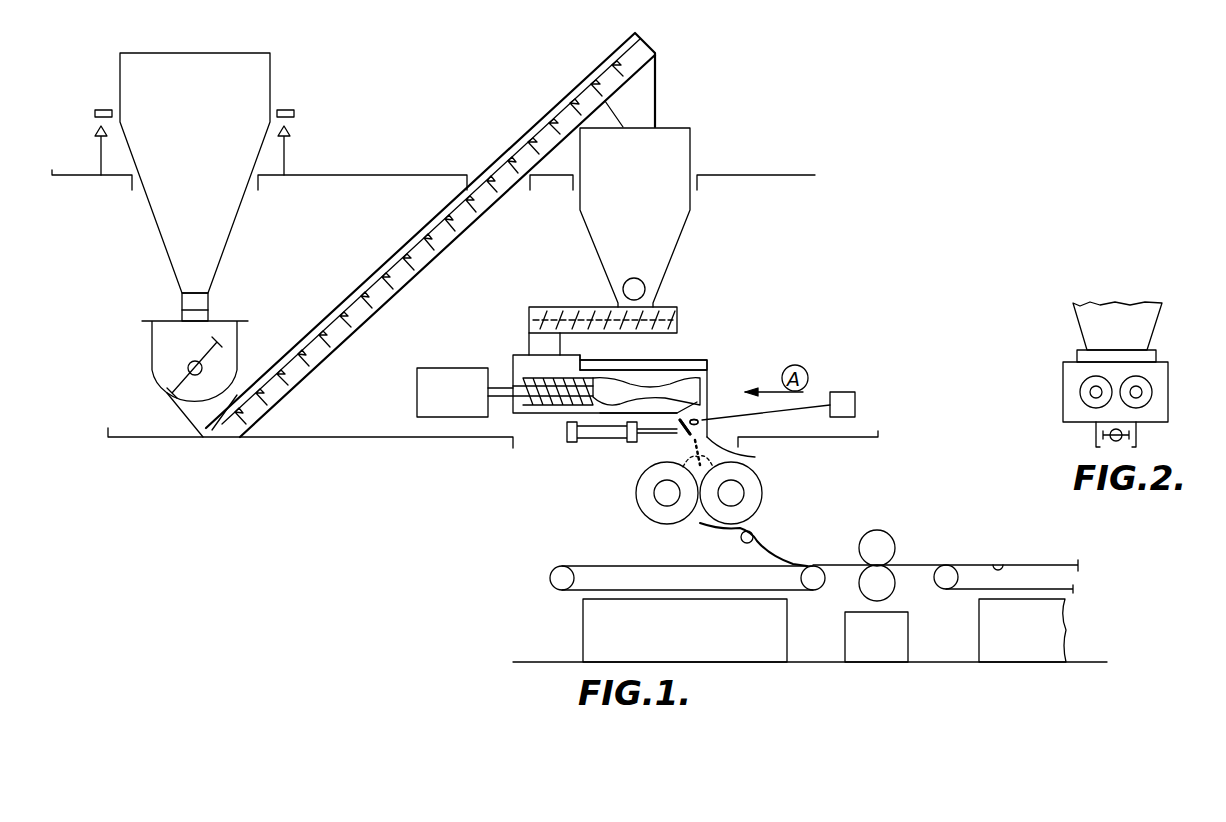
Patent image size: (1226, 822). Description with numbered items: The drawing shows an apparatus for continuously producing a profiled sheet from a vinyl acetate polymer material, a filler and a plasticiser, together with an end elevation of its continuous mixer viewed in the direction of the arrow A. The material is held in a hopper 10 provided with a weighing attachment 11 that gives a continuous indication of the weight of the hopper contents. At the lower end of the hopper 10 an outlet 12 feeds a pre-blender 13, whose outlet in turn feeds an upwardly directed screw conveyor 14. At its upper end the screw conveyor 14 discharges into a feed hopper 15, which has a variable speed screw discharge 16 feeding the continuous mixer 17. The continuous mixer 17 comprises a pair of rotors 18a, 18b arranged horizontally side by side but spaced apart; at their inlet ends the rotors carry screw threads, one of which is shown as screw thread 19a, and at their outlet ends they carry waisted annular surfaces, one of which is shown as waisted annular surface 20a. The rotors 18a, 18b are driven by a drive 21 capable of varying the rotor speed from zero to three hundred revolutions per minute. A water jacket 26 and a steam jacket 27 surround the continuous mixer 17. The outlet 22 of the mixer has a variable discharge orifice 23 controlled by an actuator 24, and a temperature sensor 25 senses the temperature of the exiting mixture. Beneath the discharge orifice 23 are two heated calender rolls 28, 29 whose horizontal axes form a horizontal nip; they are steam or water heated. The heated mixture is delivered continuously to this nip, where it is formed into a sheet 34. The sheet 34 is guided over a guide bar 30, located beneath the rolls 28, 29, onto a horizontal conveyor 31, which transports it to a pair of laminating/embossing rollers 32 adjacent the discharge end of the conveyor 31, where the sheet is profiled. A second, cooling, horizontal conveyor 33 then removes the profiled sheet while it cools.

In FIG. 1, the hopper 10 is at (258, 87).
In FIG. 1, the weighing attachment 11 is at (296, 113).
In FIG. 1, the outlet 12 is at (197, 311).
In FIG. 1, the pre-blender 13 is at (230, 352).
In FIG. 1, the screw conveyor 14 is at (395, 282).
In FIG. 1, the feed hopper 15 is at (672, 156).
In FIG. 1, the variable speed screw discharge 16 is at (552, 312).
In FIG. 1, the continuous mixer 17 is at (712, 367).
In FIG. 2, the continuous mixer 17 is at (1052, 352).
In FIG. 1, the rotor 18a is at (687, 385).
In FIG. 2, the rotor 18a is at (1080, 390).
In FIG. 2, the rotor 18b is at (1152, 390).
In FIG. 1, the screw thread 19a is at (533, 380).
In FIG. 1, the waisted annular surface 20a is at (657, 400).
In FIG. 1, the drive 21 is at (460, 404).
In FIG. 1, the outlet 22 is at (778, 431).
In FIG. 1, the variable discharge orifice 23 is at (688, 433).
In FIG. 1, the actuator 24 is at (587, 433).
In FIG. 1, the temperature sensor 25 is at (705, 410).
In FIG. 1, the water jacket 26 is at (642, 360).
In FIG. 1, the steam jacket 27 is at (590, 368).
In FIG. 1, the heated calender roll 28 is at (650, 498).
In FIG. 1, the heated calender roll 29 is at (753, 497).
In FIG. 1, the guide bar 30 is at (740, 538).
In FIG. 1, the horizontal conveyor 31 is at (627, 566).
In FIG. 1, the laminating/embossing rollers 32 is at (883, 580).
In FIG. 1, the second conveyor 33 is at (1007, 562).
In FIG. 1, the sheet 34 is at (770, 550).